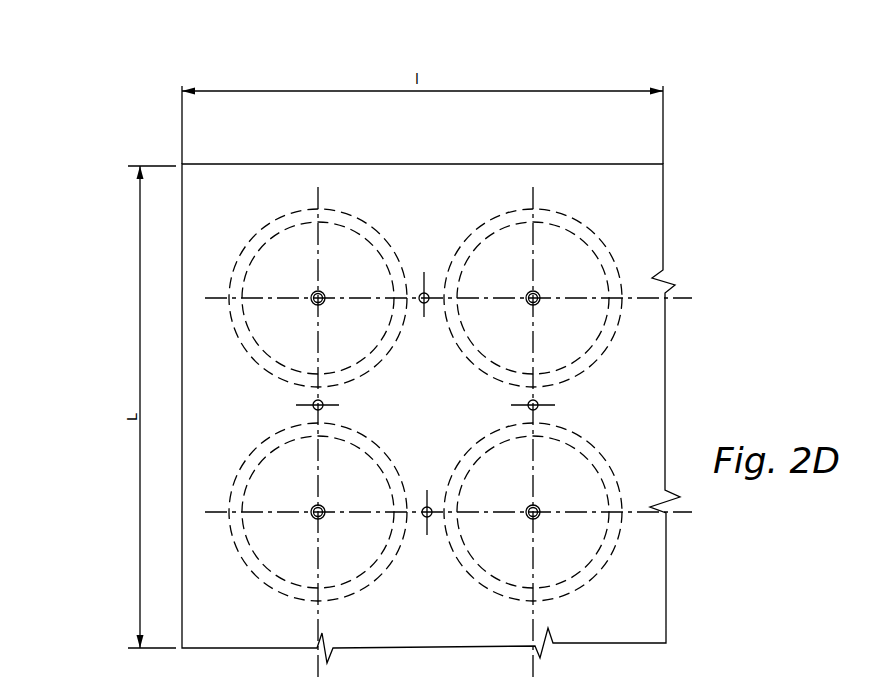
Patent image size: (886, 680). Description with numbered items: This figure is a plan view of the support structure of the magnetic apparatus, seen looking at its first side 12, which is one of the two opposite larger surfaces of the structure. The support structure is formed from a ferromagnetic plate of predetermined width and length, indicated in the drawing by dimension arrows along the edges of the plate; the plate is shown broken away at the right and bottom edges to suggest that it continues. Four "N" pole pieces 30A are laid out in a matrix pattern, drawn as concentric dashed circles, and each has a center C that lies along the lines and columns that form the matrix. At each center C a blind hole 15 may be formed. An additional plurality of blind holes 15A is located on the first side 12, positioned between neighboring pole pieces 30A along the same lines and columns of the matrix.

The first side 12 is at (633, 627).
The blind holes 15 is at (300, 282).
The additional blind holes 15A is at (428, 284).
The "N" pole pieces 30A is at (400, 221).
The center C is at (311, 297).